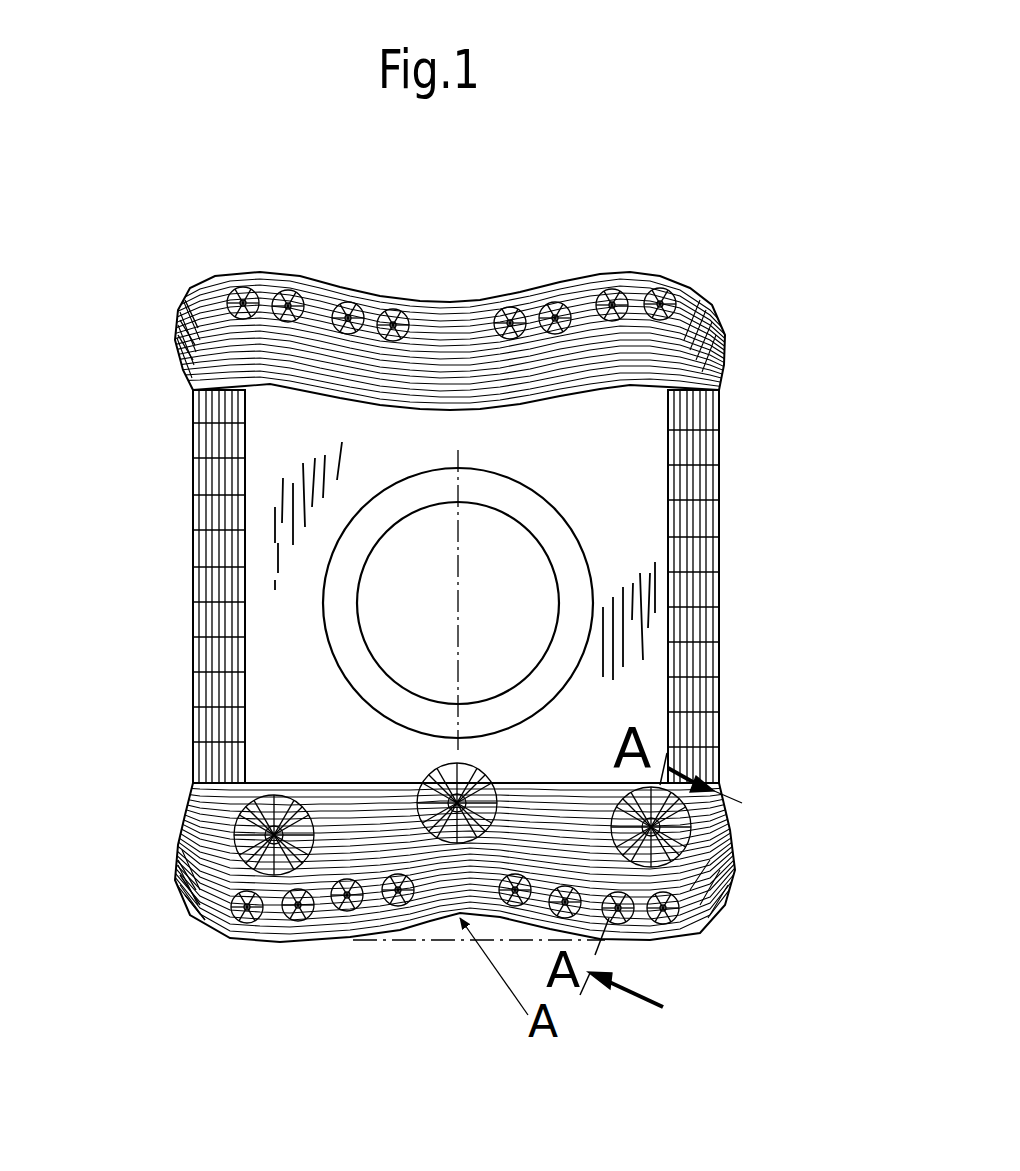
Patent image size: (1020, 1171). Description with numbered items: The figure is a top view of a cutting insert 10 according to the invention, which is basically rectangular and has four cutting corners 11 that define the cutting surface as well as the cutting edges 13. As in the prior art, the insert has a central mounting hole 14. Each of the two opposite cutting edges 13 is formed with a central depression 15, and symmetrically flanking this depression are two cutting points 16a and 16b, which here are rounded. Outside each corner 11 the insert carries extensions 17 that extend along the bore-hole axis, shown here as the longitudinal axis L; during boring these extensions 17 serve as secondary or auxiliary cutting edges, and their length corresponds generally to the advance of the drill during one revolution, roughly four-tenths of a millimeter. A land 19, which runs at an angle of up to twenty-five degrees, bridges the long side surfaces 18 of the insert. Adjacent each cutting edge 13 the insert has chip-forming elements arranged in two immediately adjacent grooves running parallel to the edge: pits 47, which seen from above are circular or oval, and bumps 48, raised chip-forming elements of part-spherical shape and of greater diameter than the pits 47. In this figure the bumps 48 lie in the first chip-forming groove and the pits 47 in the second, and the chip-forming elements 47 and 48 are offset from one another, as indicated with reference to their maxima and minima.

The cutting insert 10 is at (460, 549).
The cutting corner 11 is at (713, 288).
The cutting edge 13 is at (562, 283).
The mounting hole 14 is at (420, 643).
The central depression 15 is at (426, 290).
The cutting point 16a is at (253, 268).
The cutting point 16b is at (647, 270).
The extension 17 is at (175, 330).
The long side surface 18 is at (193, 611).
The land 19 is at (190, 390).
The pits 47 is at (725, 920).
The bumps 48 is at (716, 838).
The longitudinal axis L is at (463, 455).